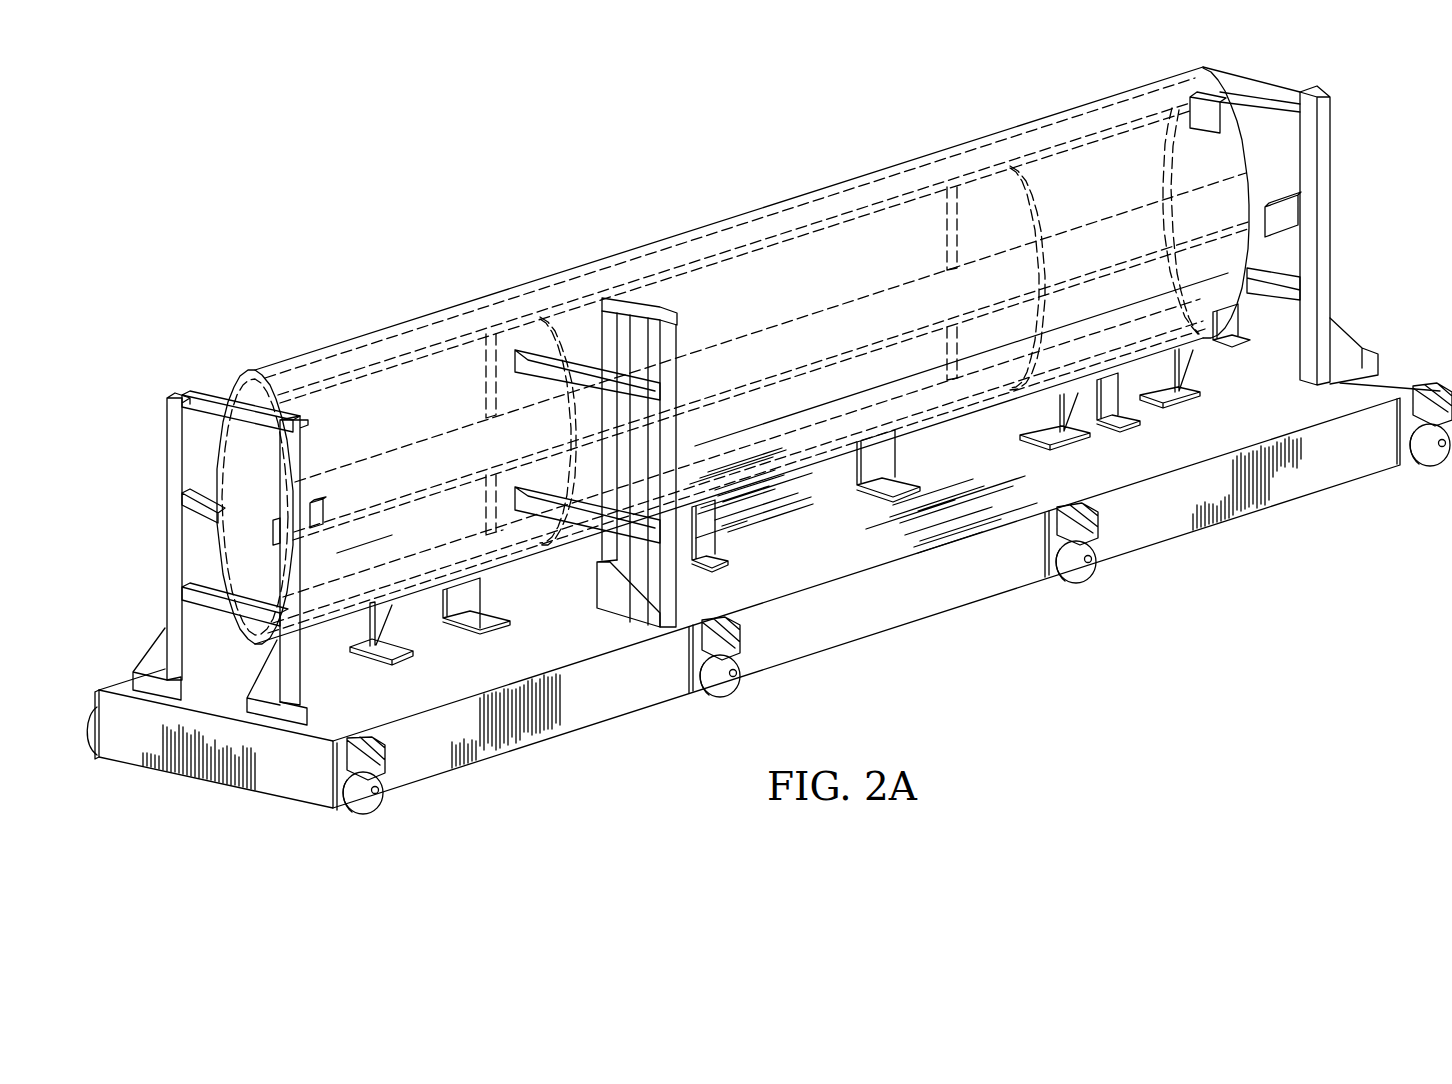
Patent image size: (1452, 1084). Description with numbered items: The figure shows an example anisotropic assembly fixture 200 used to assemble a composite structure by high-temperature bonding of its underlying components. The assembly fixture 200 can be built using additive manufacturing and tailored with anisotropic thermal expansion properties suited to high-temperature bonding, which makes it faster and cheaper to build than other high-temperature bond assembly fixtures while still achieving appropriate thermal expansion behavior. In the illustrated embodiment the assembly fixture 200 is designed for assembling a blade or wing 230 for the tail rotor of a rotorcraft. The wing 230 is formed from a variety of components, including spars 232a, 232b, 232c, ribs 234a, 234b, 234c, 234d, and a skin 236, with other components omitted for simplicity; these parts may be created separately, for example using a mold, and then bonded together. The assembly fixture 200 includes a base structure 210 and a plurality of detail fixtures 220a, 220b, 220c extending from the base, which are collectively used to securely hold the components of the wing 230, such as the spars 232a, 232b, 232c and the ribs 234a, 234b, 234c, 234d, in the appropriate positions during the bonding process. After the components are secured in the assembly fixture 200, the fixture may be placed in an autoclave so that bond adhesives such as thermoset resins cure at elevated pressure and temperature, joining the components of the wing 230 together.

The anisotropic assembly fixture 200 is at (469, 124).
The base structure 210 is at (910, 610).
The detail fixture 220a is at (312, 437).
The detail fixture 220b is at (680, 318).
The detail fixture 220c is at (1331, 160).
The blade or wing 230 is at (666, 355).
The spar 232a is at (722, 222).
The spar 232b is at (836, 303).
The spar 232c is at (948, 423).
The rib 234a is at (222, 452).
The rib 234b is at (483, 381).
The rib 234c is at (945, 226).
The rib 234d is at (1160, 157).
The skin 236 is at (348, 403).